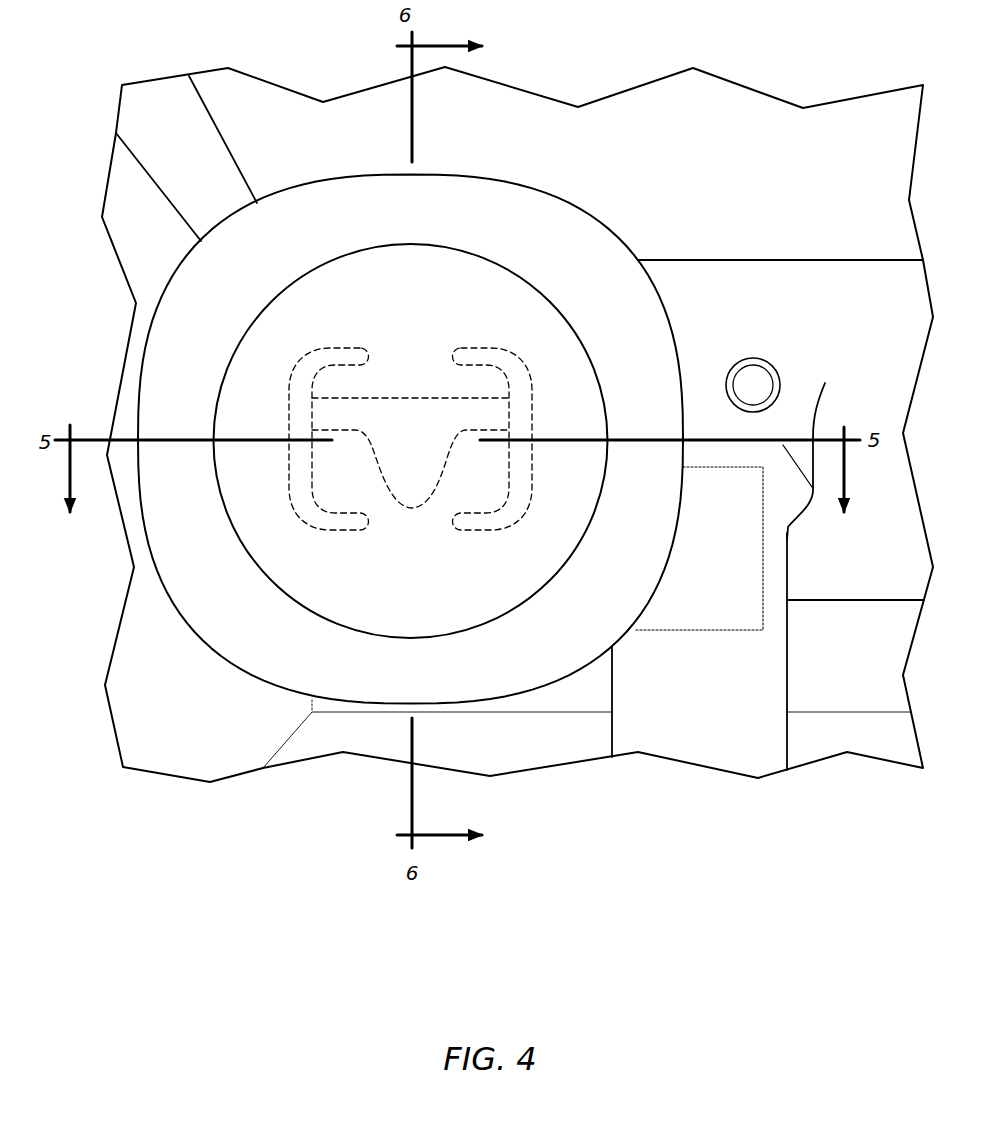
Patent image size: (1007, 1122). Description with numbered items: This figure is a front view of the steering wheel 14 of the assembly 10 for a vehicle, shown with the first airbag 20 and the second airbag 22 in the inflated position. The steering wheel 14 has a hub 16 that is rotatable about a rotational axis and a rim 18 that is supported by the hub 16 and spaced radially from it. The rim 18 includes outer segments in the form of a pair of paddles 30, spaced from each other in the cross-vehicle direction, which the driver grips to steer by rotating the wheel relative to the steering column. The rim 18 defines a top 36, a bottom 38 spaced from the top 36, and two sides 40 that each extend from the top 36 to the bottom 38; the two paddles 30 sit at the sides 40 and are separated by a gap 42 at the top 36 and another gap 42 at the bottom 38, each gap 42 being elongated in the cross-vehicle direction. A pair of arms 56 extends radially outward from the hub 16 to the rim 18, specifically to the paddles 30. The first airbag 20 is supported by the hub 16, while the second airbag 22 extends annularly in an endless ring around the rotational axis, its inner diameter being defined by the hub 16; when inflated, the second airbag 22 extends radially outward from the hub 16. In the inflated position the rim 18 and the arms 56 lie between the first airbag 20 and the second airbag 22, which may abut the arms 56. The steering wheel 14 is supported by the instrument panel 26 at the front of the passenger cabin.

The assembly 10 is at (622, 170).
The steering wheel 14 is at (482, 347).
The hub 16 is at (408, 488).
The rim 18 is at (295, 385).
The first airbag 20 is at (547, 352).
The second airbag 22 is at (597, 250).
The instrument panel 26 is at (810, 277).
The paddles 30 is at (530, 398).
The top 36 is at (397, 283).
The bottom 38 is at (363, 548).
The sides 40 is at (287, 497).
The gap 42 is at (418, 337).
The arms 56 is at (335, 410).